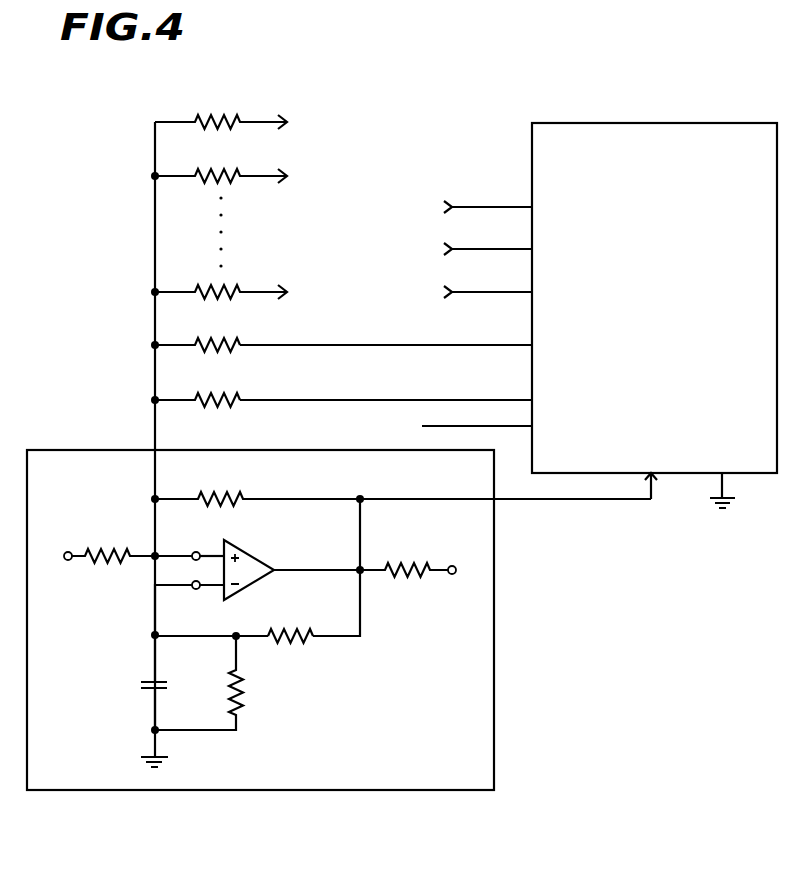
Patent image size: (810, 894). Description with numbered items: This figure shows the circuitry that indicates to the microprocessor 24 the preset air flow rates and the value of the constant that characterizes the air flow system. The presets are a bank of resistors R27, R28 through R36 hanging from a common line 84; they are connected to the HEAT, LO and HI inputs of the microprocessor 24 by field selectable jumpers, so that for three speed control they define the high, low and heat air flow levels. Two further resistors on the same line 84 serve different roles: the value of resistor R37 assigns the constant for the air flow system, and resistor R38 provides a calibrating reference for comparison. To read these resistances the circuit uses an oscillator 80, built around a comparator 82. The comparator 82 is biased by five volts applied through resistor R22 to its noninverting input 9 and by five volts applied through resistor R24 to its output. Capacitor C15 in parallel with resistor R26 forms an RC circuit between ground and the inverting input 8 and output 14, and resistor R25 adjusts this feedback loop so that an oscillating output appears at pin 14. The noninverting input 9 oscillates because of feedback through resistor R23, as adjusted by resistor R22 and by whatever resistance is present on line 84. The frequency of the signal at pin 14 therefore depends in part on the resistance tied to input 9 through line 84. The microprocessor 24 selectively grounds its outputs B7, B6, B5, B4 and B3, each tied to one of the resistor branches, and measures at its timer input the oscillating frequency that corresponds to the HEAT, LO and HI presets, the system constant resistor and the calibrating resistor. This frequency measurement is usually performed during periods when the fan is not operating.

The microprocessor 24 is at (508, 298).
The oscillator 80 is at (494, 652).
The comparator 82 is at (257, 576).
The line 84 is at (155, 232).
The resistor R22 is at (100, 555).
The resistor R23 is at (226, 499).
The resistor R24 is at (412, 570).
The resistor R25 is at (300, 641).
The resistor R26 is at (241, 700).
The preset resistor R27 is at (228, 86).
The preset resistor R28 is at (228, 152).
The preset resistor R36 is at (222, 291).
The resistor R37 is at (230, 345).
The calibrating resistor R38 is at (230, 400).
The capacitor C15 is at (148, 682).
The inverting input 8 is at (189, 600).
The noninverting input 9 is at (208, 547).
The output pin 14 is at (317, 559).
The microprocessor output B3 is at (405, 401).
The microprocessor output B4 is at (405, 348).
The microprocessor output B5 is at (507, 294).
The microprocessor output B6 is at (507, 249).
The microprocessor output B7 is at (507, 208).